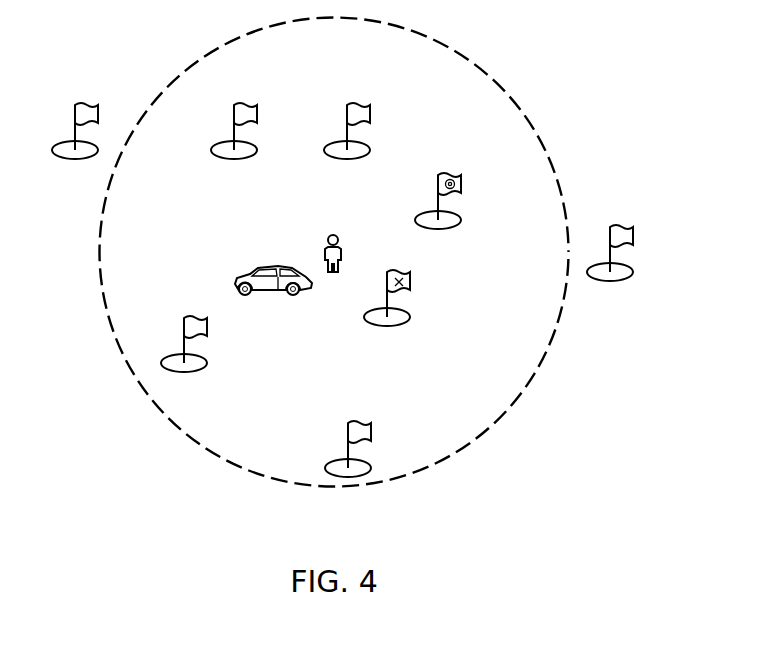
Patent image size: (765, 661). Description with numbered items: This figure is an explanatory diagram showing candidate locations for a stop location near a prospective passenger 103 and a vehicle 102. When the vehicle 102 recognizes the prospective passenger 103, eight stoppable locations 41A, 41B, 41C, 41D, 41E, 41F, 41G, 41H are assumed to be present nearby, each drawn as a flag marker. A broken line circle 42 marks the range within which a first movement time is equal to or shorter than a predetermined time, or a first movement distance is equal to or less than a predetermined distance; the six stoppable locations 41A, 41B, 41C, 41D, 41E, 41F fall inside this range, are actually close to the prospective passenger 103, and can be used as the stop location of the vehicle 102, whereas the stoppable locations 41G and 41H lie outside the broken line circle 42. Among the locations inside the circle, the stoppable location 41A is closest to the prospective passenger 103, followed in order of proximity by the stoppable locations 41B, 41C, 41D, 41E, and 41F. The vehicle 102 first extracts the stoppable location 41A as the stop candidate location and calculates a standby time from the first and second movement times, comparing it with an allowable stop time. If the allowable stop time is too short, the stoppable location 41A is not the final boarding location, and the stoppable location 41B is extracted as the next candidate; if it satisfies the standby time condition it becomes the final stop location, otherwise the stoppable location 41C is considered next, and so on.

The broken line circle 42 is at (483, 70).
The stoppable location 41A is at (390, 272).
The stoppable location 41B is at (441, 175).
The stoppable location 41C is at (350, 105).
The stoppable location 41D is at (237, 105).
The stoppable location 41E is at (187, 318).
The stoppable location 41F is at (351, 423).
The stoppable location 41G is at (78, 105).
The stoppable location 41H is at (613, 227).
The vehicle 102 is at (267, 265).
The prospective passenger 103 is at (334, 234).